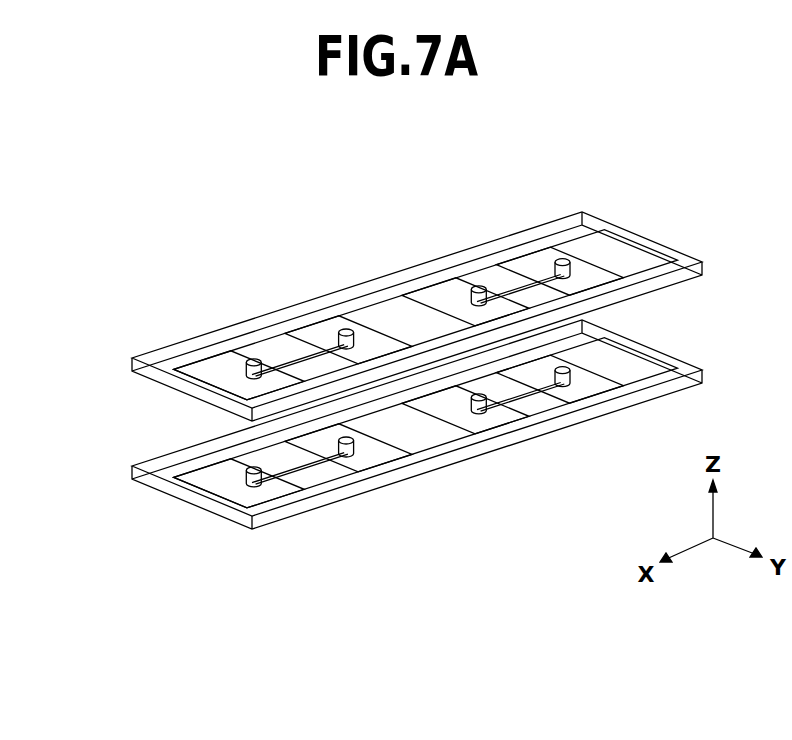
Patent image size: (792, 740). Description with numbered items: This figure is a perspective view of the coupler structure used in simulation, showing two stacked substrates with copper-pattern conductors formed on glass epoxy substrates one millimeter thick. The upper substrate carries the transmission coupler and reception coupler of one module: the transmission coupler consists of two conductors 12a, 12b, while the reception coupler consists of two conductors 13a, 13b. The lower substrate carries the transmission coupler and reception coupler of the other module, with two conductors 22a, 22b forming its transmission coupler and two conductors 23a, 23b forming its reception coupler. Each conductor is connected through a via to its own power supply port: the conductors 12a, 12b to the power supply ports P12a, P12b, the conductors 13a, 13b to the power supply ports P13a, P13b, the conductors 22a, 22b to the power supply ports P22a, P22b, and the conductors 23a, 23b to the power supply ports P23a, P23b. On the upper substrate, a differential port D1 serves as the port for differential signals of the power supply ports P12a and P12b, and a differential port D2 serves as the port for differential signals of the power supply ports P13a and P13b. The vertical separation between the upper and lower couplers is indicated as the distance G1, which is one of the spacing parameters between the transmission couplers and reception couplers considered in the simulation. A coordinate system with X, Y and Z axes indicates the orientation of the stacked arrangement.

The conductor 12a is at (368, 328).
The conductor 12b is at (200, 362).
The conductor 13a is at (594, 252).
The conductor 13b is at (450, 286).
The power supply port P12a is at (338, 334).
The power supply port P12b is at (246, 362).
The power supply port P13a is at (556, 264).
The power supply port P13b is at (472, 290).
The conductor 22a is at (628, 396).
The conductor 22b is at (453, 420).
The conductor 23a is at (386, 463).
The conductor 23b is at (236, 491).
The power supply port P22a is at (567, 390).
The power supply port P22b is at (485, 413).
The power supply port P23a is at (347, 456).
The power supply port P23b is at (262, 488).
The differential port D1 is at (145, 232).
The differential port D2 is at (400, 160).
The distance G1 is at (702, 277).